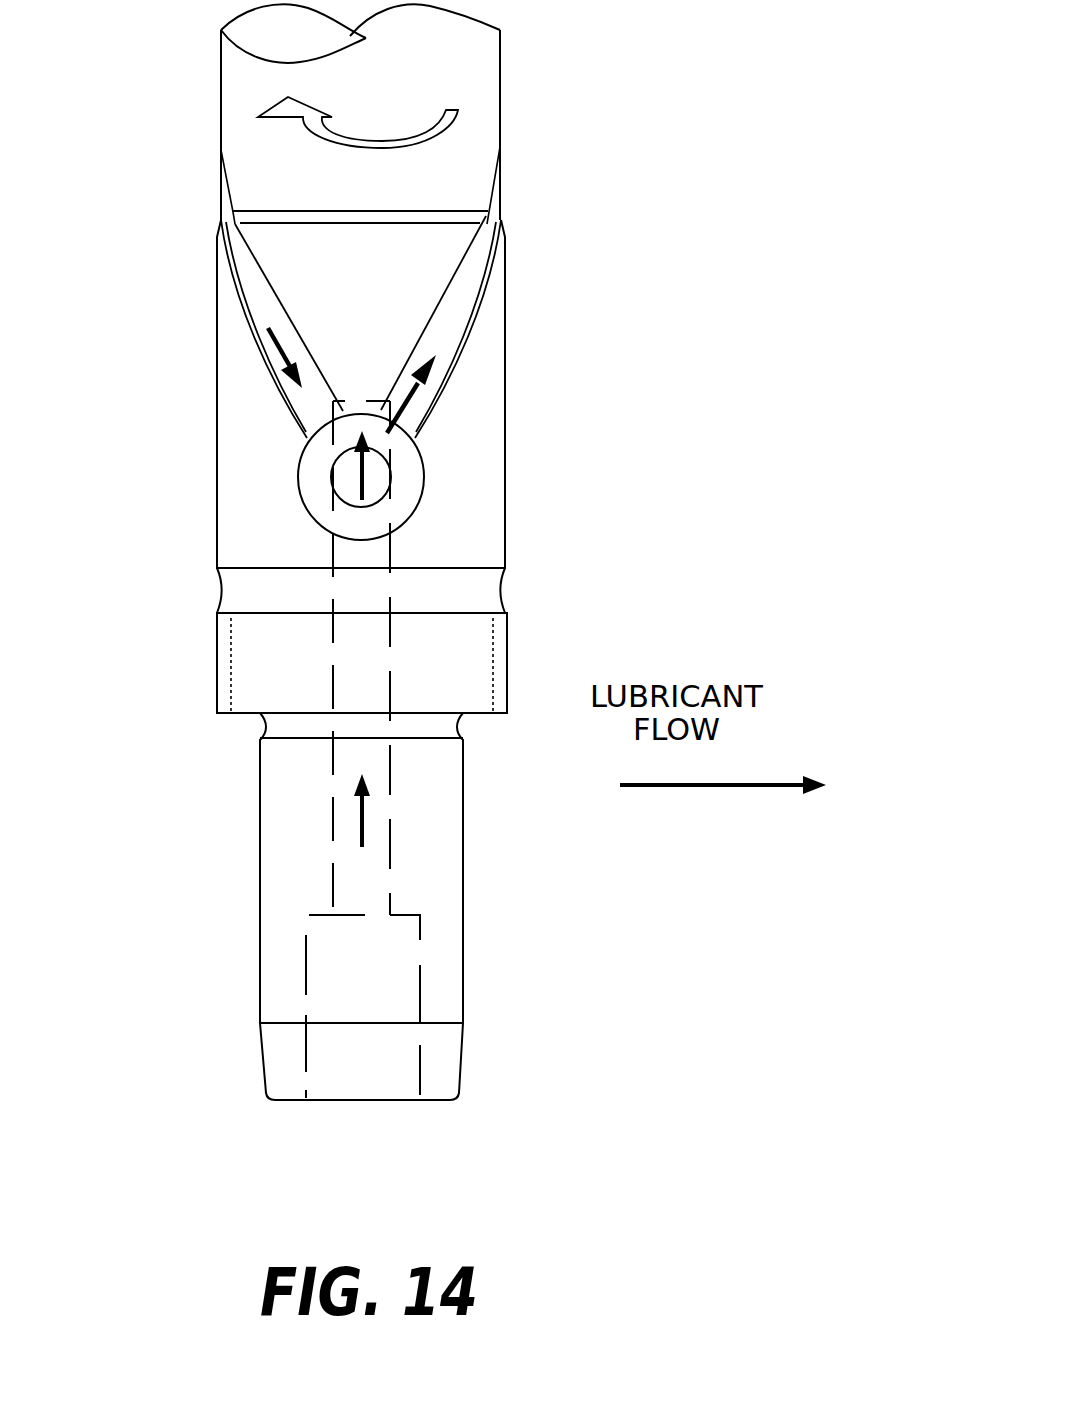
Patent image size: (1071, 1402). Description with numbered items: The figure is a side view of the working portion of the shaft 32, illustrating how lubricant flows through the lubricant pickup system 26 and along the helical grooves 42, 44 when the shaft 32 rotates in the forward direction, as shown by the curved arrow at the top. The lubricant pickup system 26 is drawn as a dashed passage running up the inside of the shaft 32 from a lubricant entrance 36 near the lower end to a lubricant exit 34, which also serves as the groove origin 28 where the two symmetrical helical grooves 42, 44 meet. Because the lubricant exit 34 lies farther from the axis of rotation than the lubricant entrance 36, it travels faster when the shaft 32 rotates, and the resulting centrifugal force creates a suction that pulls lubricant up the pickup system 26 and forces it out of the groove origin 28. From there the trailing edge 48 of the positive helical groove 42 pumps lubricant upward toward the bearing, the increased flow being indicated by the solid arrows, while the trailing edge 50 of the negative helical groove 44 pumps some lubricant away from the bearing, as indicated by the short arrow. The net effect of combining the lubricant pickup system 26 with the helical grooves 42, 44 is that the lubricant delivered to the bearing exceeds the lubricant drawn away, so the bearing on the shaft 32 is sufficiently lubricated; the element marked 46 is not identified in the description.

The lubricant pickup system 26 is at (412, 977).
The groove origin 28 is at (307, 438).
The shaft 32 is at (520, 472).
The lubricant exit 34 is at (352, 487).
The lubricant entrance 36 is at (337, 1102).
The helical groove 42 is at (497, 318).
The helical groove 44 is at (249, 348).
The groove wall 46 is at (492, 367).
The trailing edge 48 is at (243, 307).
The trailing edge 50 is at (217, 230).